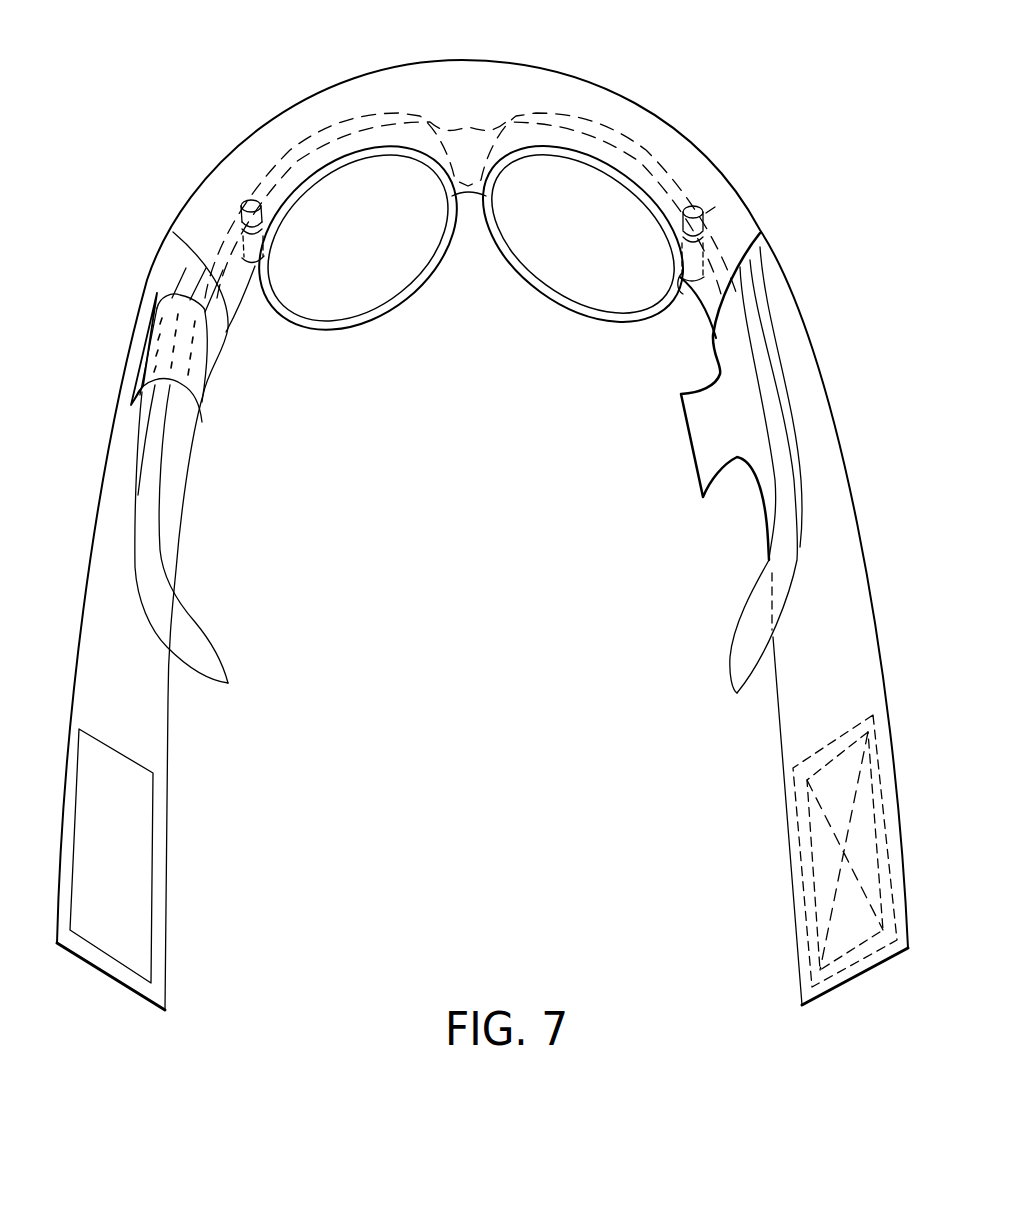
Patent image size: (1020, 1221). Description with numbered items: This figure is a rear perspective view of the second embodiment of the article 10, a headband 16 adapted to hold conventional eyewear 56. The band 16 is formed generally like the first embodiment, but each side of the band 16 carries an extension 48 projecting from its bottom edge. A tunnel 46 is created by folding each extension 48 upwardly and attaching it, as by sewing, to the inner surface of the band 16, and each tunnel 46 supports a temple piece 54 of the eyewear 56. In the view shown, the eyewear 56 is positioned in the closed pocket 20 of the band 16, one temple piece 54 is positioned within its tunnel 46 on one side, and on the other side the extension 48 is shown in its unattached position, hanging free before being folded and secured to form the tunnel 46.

The article 10 is at (647, 113).
The headband 16 is at (793, 280).
The closed pocket 20 is at (200, 190).
The tunnel 46 is at (181, 398).
The extension 48 is at (688, 454).
The temple piece 54 is at (233, 678).
The conventional eyewear 56 is at (368, 115).